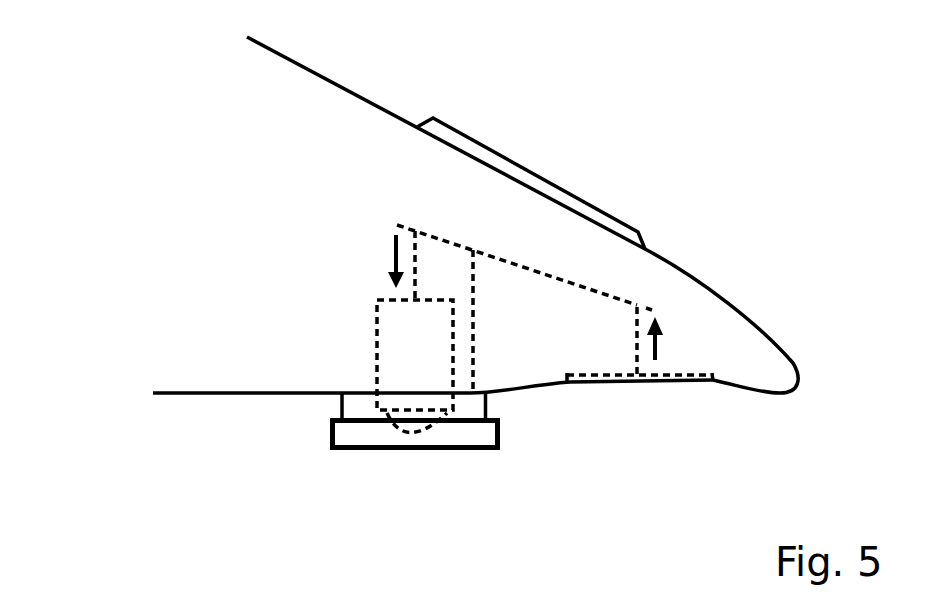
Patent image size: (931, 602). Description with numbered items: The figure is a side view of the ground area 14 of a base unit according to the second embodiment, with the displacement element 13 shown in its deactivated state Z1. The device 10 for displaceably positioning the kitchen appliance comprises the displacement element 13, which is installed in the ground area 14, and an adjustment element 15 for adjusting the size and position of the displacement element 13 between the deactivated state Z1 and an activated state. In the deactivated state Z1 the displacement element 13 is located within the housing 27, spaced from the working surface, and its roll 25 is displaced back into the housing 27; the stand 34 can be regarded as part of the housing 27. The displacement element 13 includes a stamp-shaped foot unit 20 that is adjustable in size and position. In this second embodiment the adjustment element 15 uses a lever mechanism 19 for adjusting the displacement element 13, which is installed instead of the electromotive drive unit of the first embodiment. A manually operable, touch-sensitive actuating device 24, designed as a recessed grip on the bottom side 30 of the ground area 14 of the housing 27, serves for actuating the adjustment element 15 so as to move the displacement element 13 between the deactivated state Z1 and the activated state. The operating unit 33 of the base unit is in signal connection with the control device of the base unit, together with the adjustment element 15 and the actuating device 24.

The device 10 is at (419, 271).
The ground area 14 is at (386, 406).
The housing 27 is at (347, 90).
The operating unit 33 is at (510, 160).
The bottom side 30 is at (233, 395).
The lever mechanism 19 is at (524, 271).
The adjustment element 15 is at (348, 223).
The foot unit 20 is at (377, 340).
The displacement element 13 is at (345, 312).
The actuating device 24 is at (617, 372).
The stand 34 is at (483, 433).
The roll 25 is at (428, 435).
The deactivated state Z1 is at (525, 416).